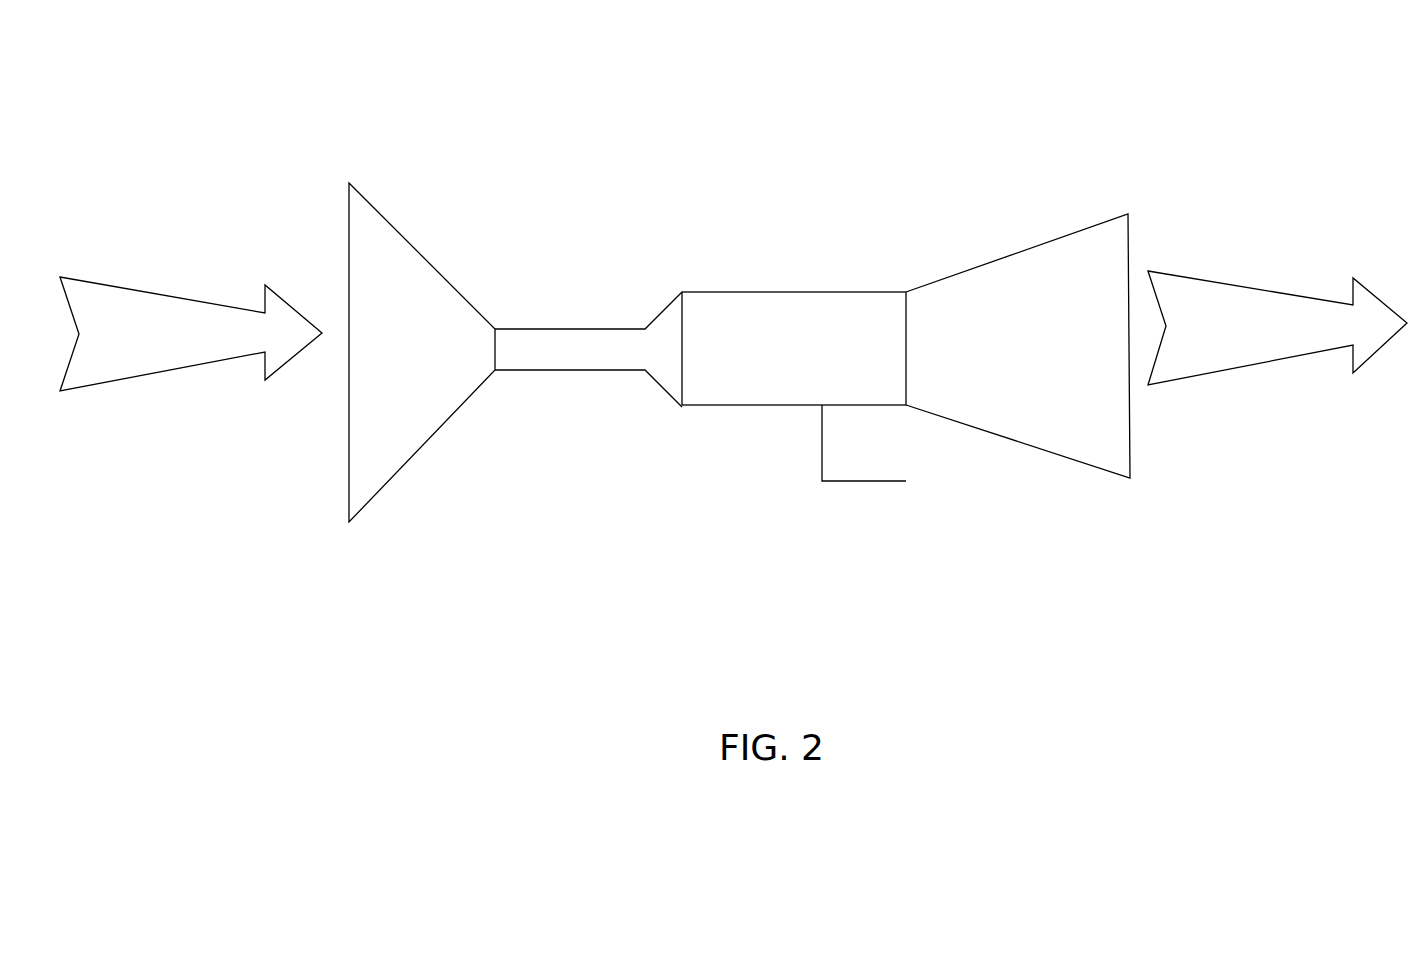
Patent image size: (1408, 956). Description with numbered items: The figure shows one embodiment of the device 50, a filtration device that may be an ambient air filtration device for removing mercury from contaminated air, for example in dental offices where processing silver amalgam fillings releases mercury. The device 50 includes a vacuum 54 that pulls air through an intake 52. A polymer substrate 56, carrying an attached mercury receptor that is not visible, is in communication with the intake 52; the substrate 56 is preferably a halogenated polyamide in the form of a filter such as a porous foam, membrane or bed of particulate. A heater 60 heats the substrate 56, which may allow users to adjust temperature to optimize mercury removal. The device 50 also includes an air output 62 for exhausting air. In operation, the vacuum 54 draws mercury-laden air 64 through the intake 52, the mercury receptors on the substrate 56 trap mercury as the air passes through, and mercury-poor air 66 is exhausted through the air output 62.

The device 50 is at (414, 56).
The intake 52 is at (401, 278).
The vacuum 54 is at (563, 348).
The polymer substrate 56 is at (738, 312).
The heater 60 is at (869, 461).
The air output 62 is at (980, 290).
The mercury-laden air 64 is at (124, 297).
The mercury-poor air 66 is at (1223, 288).